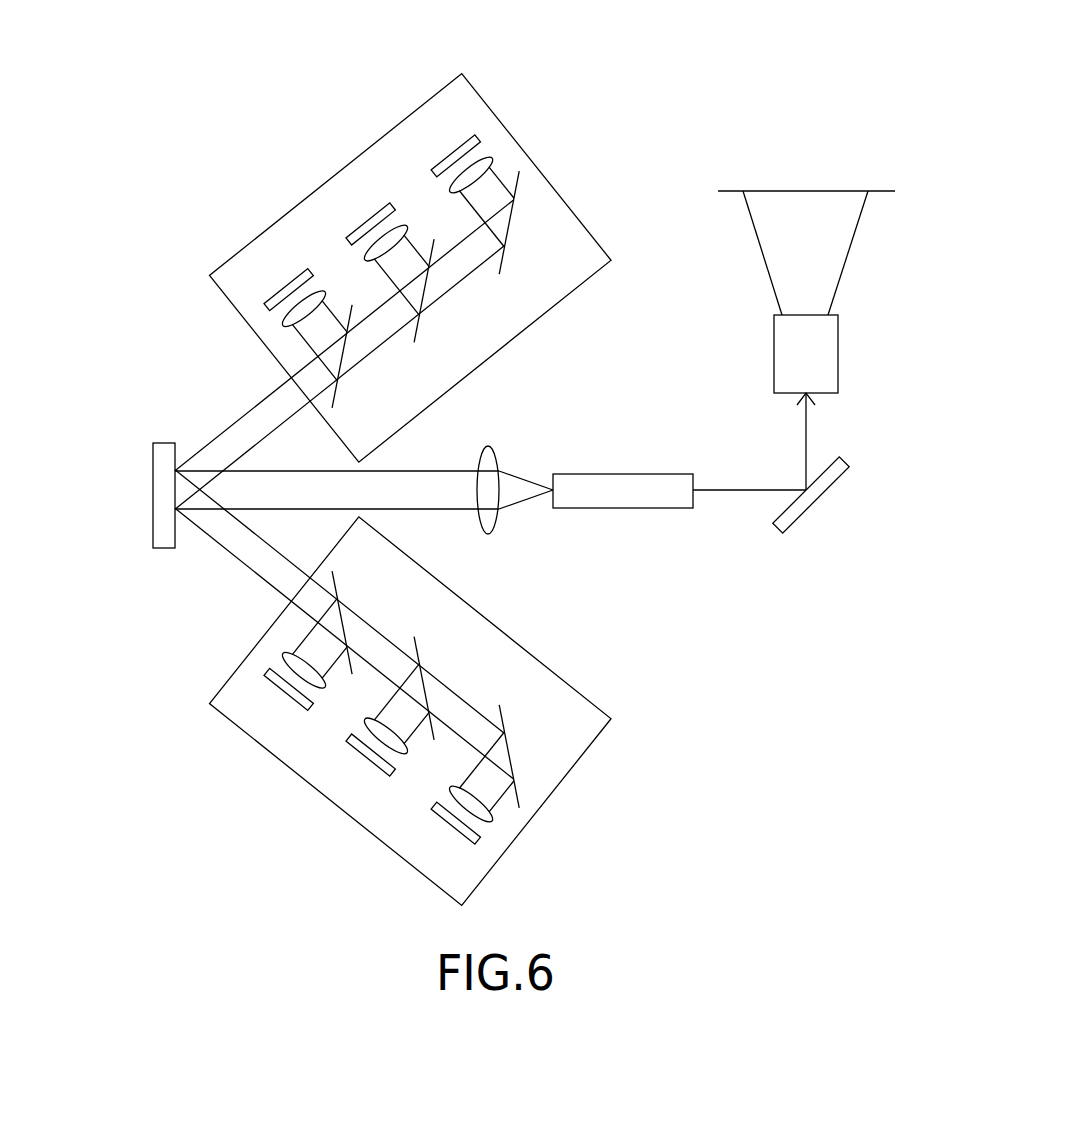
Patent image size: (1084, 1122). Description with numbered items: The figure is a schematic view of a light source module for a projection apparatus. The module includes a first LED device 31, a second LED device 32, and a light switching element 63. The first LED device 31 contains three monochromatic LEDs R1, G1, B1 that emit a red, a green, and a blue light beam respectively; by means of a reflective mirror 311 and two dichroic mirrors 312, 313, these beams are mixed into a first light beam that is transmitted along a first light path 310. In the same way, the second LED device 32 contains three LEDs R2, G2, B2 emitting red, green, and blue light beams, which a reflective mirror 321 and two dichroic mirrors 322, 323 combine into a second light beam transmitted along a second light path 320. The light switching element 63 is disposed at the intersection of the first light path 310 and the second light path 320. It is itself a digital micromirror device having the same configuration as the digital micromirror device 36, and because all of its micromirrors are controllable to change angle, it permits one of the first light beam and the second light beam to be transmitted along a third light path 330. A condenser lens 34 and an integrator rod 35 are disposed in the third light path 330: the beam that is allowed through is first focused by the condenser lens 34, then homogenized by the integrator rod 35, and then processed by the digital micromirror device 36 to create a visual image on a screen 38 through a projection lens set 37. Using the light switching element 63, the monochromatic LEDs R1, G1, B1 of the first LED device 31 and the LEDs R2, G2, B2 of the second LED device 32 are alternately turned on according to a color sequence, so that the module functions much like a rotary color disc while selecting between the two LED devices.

The first LED device 31 is at (482, 92).
The first light path 310 is at (238, 440).
The reflective mirror 311 is at (512, 205).
The dichroic mirror 312 is at (427, 273).
The dichroic mirror 313 is at (343, 343).
The monochromatic LED R1 is at (476, 181).
The monochromatic LED G1 is at (391, 249).
The monochromatic LED B1 is at (309, 315).
The second LED device 32 is at (572, 687).
The second light path 320 is at (233, 542).
The reflective mirror 321 is at (507, 753).
The dichroic mirror 322 is at (422, 678).
The dichroic mirror 323 is at (342, 617).
The LED R2 is at (476, 798).
The LED G2 is at (390, 730).
The LED B2 is at (308, 665).
The light switching element 63 is at (163, 508).
The third light path 330 is at (383, 476).
The condenser lens 34 is at (490, 520).
The integrator rod 35 is at (642, 485).
The digital micromirror device 36 is at (823, 478).
The projection lens set 37 is at (828, 363).
The screen 38 is at (822, 190).